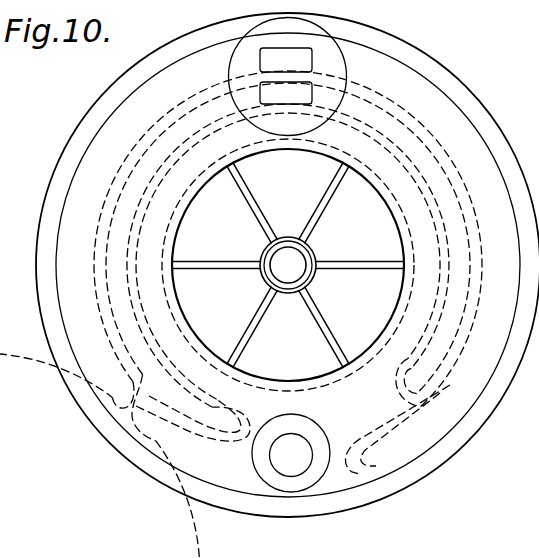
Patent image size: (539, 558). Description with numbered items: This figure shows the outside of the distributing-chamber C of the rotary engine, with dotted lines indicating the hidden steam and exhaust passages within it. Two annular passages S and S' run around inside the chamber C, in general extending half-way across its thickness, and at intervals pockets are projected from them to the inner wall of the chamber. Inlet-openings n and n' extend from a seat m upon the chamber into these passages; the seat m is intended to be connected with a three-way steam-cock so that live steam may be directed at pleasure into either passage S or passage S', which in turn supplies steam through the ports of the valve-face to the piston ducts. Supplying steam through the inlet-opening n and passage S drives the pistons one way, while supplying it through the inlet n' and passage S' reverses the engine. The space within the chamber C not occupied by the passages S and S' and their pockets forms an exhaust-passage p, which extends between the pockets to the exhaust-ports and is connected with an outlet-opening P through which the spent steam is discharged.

The distributing-chamber C is at (116, 108).
The seat m is at (246, 36).
The inlet-opening n is at (286, 60).
The inlet-opening n' is at (286, 93).
The annular passage S is at (217, 324).
The annular passage S' is at (288, 272).
The exhaust-passage p is at (436, 218).
The outlet-opening P is at (291, 453).